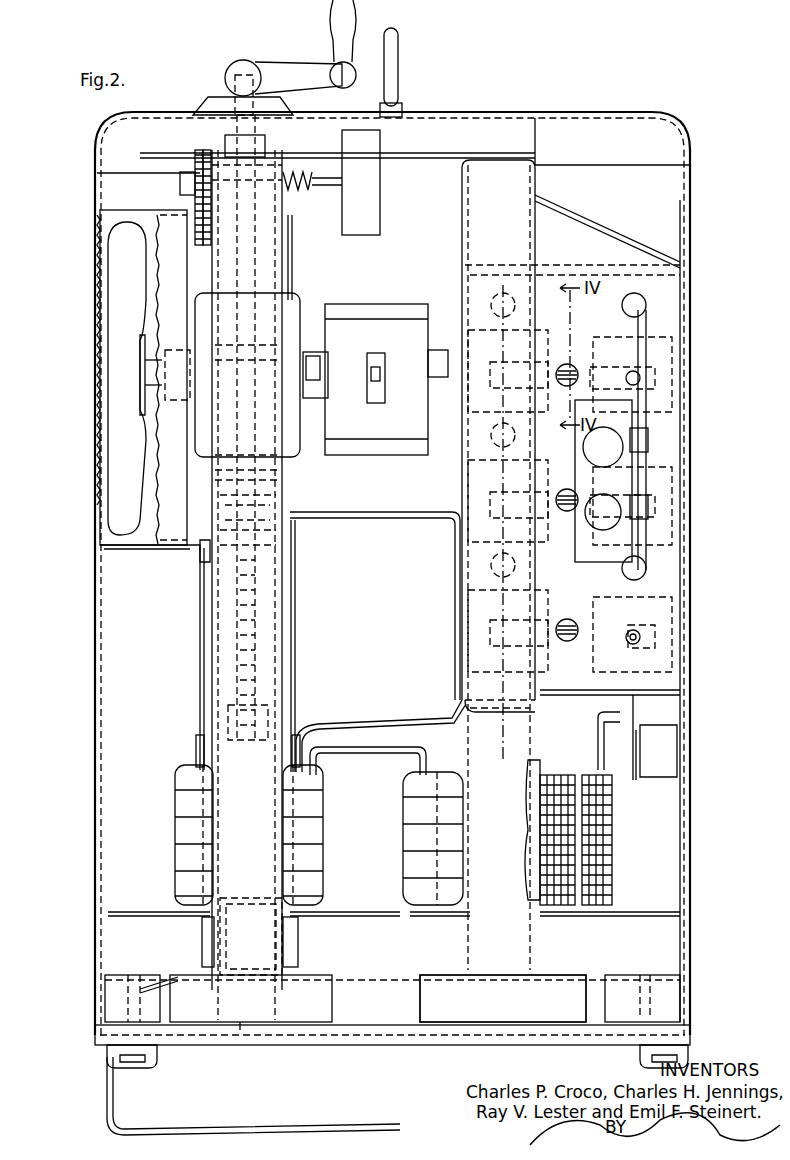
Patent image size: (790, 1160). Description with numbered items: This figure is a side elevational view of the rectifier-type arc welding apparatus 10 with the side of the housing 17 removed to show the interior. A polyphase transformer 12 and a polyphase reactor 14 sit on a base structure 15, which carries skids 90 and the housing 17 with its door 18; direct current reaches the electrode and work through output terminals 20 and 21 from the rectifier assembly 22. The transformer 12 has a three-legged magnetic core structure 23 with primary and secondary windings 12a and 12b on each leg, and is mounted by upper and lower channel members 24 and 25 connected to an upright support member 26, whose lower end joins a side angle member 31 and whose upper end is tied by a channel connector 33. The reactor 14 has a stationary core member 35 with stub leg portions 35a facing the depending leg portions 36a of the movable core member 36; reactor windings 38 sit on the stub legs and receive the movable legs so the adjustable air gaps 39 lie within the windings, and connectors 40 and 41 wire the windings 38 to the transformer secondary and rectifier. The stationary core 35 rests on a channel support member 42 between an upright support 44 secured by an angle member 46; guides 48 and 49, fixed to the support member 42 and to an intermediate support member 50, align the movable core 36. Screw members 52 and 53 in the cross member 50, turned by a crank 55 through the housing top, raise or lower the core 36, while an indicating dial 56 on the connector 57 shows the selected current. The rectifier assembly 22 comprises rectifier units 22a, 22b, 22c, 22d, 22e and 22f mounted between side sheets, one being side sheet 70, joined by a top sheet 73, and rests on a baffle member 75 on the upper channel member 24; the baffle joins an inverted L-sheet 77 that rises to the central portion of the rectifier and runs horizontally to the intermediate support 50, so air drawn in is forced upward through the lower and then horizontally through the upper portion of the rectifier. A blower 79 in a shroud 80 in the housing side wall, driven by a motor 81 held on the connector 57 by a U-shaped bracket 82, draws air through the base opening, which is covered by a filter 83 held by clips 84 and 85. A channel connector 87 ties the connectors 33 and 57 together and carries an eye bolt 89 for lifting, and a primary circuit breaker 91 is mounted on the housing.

The arc welding apparatus 10 is at (460, 109).
The polyphase transformer 12 is at (634, 827).
The primary windings 12a is at (553, 774).
The secondary windings 12b is at (606, 853).
The polyphase reactor 14 is at (155, 837).
The base structure 15 is at (498, 1047).
The housing 17 is at (86, 654).
The door 18 is at (692, 826).
The output terminal 20 is at (620, 458).
The output terminal 21 is at (600, 524).
The rectifier assembly 22 is at (728, 509).
The rectifier unit 22a is at (668, 351).
The rectifier unit 22b is at (472, 322).
The rectifier unit 22c is at (668, 474).
The rectifier unit 22d is at (478, 472).
The rectifier unit 22e is at (670, 608).
The rectifier unit 22f is at (462, 603).
The magnetic core structure 23 is at (526, 845).
The upper channel member 24 is at (537, 712).
The lower channel member 25 is at (538, 927).
The upright support member 26 is at (484, 213).
The side angle member 31 is at (581, 977).
The channel connector 33 is at (538, 164).
The stationary core member 35 is at (210, 939).
The stub leg portions 35a is at (276, 912).
The movable core member 36 is at (200, 749).
The depending leg portions 36a is at (178, 798).
The reactor windings 38 is at (323, 835).
The air gaps 39 is at (260, 896).
The connector 40 is at (376, 756).
The connector 41 is at (362, 722).
The channel support member 42 is at (298, 939).
The upright support 44 is at (283, 482).
The angle member 46 is at (238, 1024).
The guide 48 is at (200, 596).
The guide 49 is at (298, 634).
The intermediate support member 50 is at (207, 556).
The screw member 52 is at (238, 410).
The screw member 53 is at (268, 599).
The crank 55 is at (334, 18).
The indicating dial 56 is at (381, 197).
The connector 57 is at (223, 150).
The side sheet 70 is at (670, 684).
The top sheet 73 is at (579, 262).
The baffle member 75 is at (643, 708).
The inverted L-sheet 77 is at (342, 512).
The blower 79 is at (118, 283).
The shroud 80 is at (100, 546).
The motor 81 is at (301, 298).
The U-shaped bracket 82 is at (292, 243).
The filter 83 is at (398, 978).
The clip 84 is at (652, 985).
The clip 85 is at (163, 972).
The channel connector 87 is at (538, 140).
The eye bolt 89 is at (401, 46).
The skids 90 is at (107, 1106).
The primary circuit breaker 91 is at (357, 314).